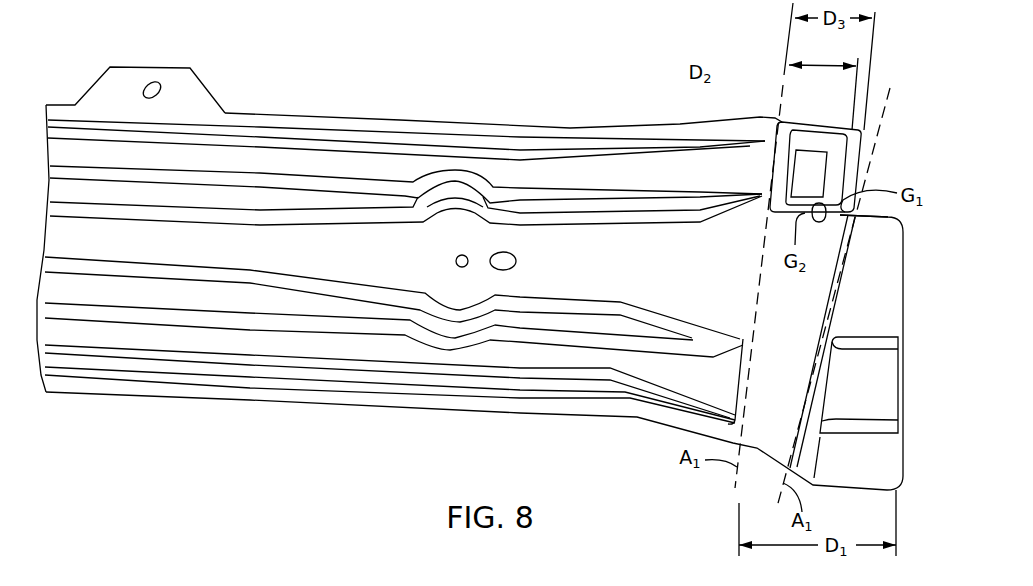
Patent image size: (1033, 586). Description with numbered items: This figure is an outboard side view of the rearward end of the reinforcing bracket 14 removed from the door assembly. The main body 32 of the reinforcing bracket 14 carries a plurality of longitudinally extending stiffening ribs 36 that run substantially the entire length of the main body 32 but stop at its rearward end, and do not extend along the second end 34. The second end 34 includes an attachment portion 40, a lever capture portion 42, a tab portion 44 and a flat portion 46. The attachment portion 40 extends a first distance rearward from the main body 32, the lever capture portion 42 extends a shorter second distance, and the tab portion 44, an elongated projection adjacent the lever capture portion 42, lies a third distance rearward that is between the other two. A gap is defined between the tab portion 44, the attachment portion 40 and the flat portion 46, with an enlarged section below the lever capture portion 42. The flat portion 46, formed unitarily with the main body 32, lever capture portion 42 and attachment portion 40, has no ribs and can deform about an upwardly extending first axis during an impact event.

The reinforcing bracket 14 is at (281, 76).
The main body 32 is at (395, 126).
The stiffening ribs 36 is at (531, 172).
The lever capture portion 42 is at (803, 180).
The tab portion 44 is at (830, 148).
The flat portion 46 is at (797, 303).
The second end 34 is at (914, 278).
The attachment portion 40 is at (866, 382).